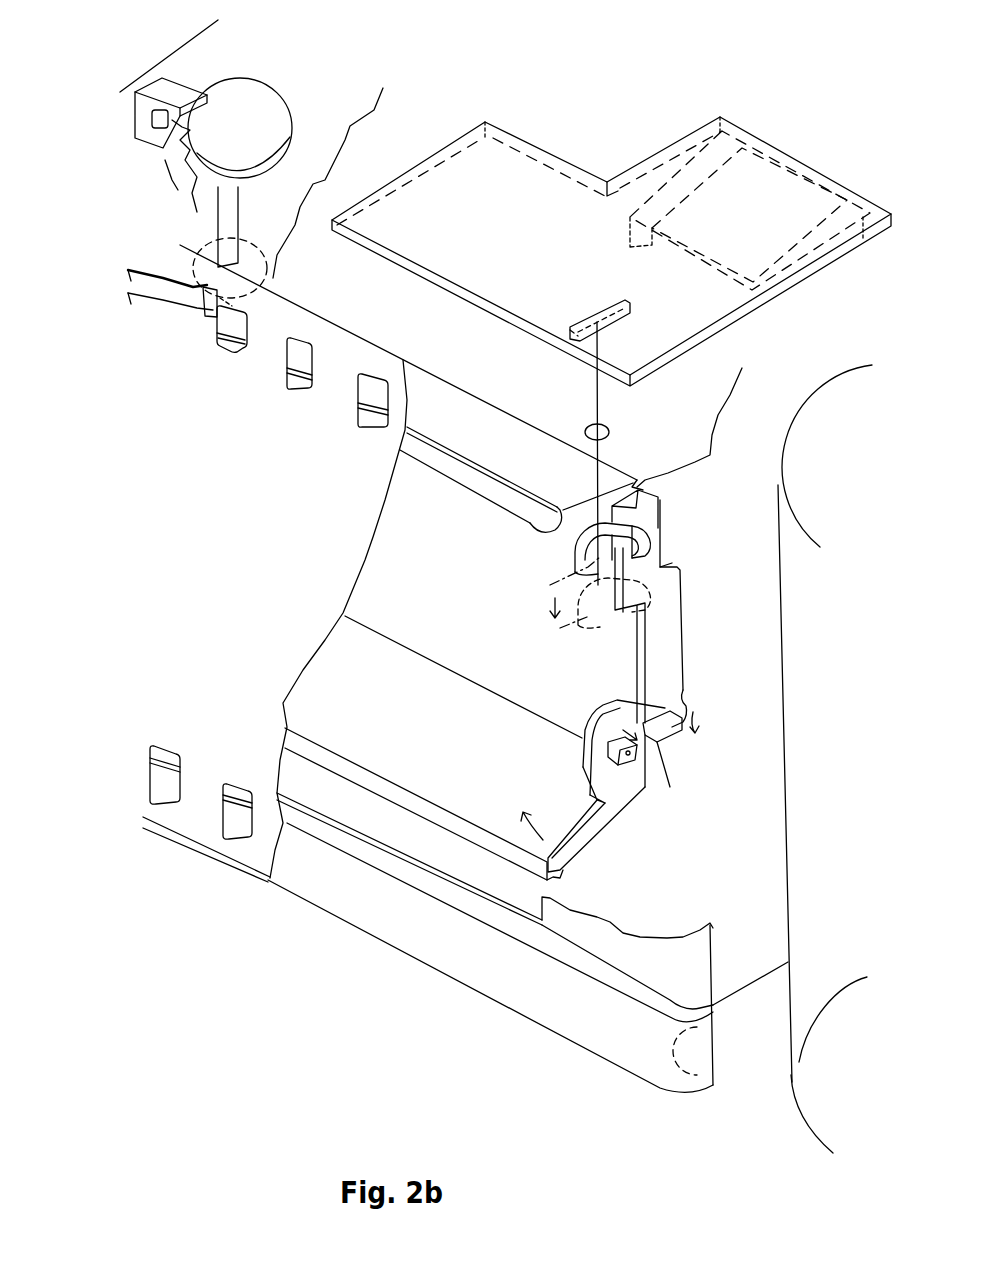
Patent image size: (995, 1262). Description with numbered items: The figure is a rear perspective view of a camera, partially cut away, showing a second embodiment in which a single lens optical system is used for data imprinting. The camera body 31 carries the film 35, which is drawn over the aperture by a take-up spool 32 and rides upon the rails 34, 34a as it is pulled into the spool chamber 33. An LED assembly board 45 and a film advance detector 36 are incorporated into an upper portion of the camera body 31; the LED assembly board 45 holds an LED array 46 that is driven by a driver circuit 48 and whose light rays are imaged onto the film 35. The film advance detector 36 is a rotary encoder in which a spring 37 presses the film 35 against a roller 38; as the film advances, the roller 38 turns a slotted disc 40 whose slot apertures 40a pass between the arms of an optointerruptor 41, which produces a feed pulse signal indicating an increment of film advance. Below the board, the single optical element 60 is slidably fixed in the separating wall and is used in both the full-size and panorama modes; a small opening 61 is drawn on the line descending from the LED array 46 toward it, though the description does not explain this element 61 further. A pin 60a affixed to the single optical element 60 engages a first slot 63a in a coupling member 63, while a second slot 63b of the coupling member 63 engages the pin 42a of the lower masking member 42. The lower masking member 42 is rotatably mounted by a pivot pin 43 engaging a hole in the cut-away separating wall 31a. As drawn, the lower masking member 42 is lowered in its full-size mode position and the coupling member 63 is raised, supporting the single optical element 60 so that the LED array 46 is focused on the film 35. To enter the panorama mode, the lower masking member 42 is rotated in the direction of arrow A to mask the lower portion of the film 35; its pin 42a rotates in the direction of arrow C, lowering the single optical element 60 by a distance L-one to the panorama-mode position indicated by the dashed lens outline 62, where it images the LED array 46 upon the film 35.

The camera body 31 is at (517, 1005).
The separating wall 31a is at (713, 940).
The take-up spool 32 is at (798, 828).
The spool chamber 33 is at (747, 1073).
The rail 34 is at (392, 870).
The rail 34a is at (463, 462).
The film 35 is at (227, 853).
The film advance detector 36 is at (119, 230).
The spring 37 is at (165, 302).
The roller 38 is at (253, 248).
The slotted disc 40 is at (266, 95).
The slot apertures 40a is at (174, 166).
The optointerruptor 41 is at (181, 96).
The lower masking member 42 is at (609, 786).
The pin 42a is at (684, 694).
The pivot pin 43 is at (607, 747).
The LED assembly board 45 is at (535, 182).
The LED array 46 is at (598, 300).
The driver circuit 48 is at (790, 202).
The single optical element 60 is at (614, 586).
The pin 60a is at (645, 526).
The hole 61 is at (600, 395).
The dashed lens outline 62 is at (605, 640).
The coupling member 63 is at (690, 672).
The first slot 63a is at (660, 567).
The second slot 63b is at (660, 760).